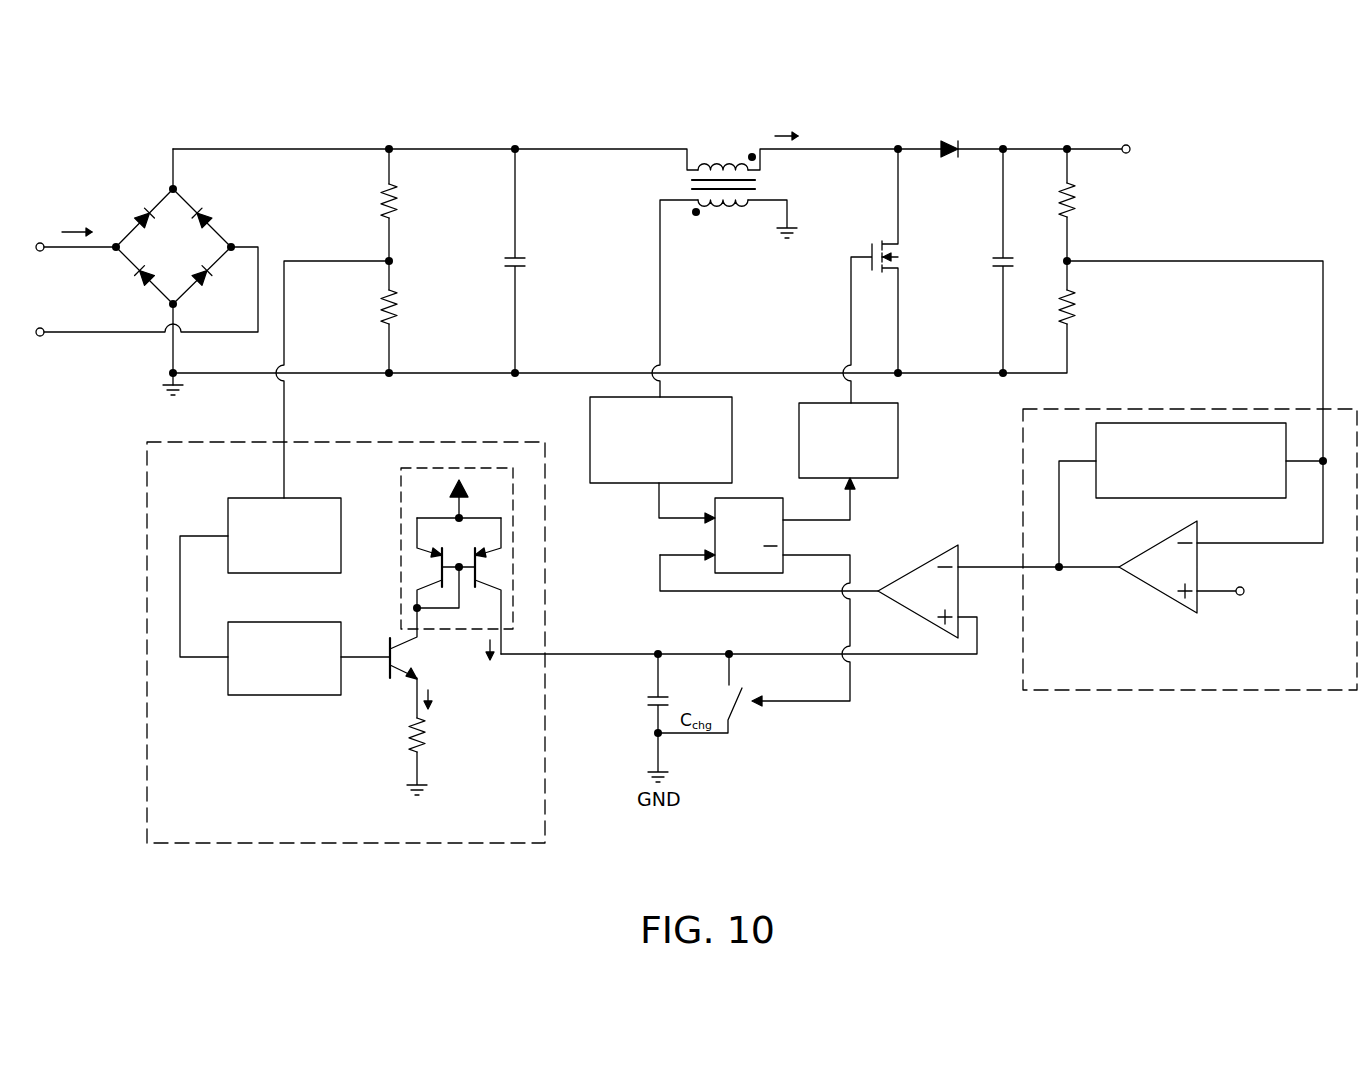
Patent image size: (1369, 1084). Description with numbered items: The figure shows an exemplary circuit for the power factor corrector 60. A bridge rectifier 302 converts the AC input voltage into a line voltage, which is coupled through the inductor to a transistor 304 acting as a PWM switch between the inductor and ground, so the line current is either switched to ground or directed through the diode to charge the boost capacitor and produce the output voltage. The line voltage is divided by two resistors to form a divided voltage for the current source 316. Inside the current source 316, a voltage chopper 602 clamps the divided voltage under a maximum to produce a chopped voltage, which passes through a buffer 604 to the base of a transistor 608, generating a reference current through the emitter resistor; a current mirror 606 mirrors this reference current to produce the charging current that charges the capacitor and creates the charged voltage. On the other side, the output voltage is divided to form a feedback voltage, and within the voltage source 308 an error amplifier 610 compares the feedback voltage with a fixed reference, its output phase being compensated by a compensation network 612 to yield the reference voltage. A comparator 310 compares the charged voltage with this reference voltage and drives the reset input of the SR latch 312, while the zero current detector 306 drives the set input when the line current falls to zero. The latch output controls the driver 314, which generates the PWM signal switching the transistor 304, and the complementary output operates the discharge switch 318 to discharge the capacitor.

The power factor corrector 60 is at (1290, 112).
The bridge rectifier 302 is at (134, 186).
The transistor 304 is at (876, 244).
The zero current detector 306 is at (590, 443).
The voltage source 308 is at (1205, 409).
The comparator 310 is at (917, 568).
The SR latch 312 is at (752, 497).
The driver 314 is at (898, 443).
The current source 316 is at (545, 727).
The discharge switch 318 is at (744, 718).
The voltage chopper 602 is at (257, 498).
The buffer 604 is at (312, 622).
The current mirror 606 is at (401, 528).
The transistor 608 is at (390, 683).
The error amplifier 610 is at (1155, 596).
The compensation network 612 is at (1163, 423).